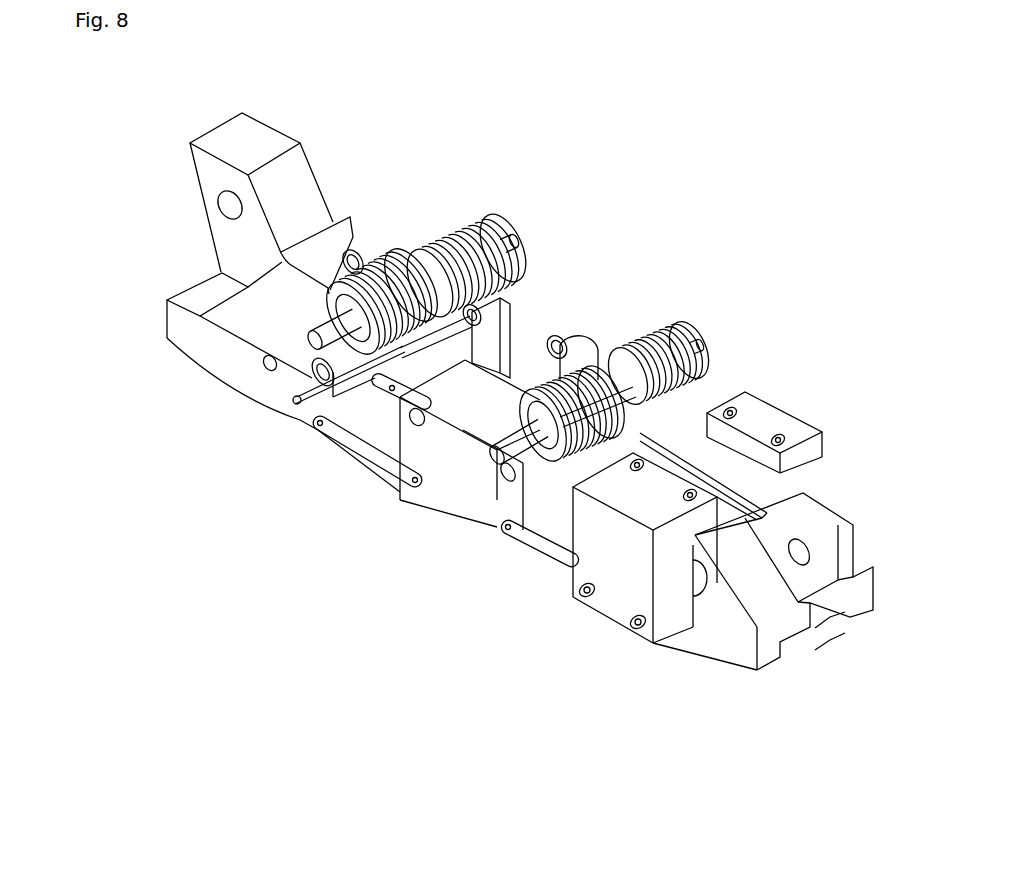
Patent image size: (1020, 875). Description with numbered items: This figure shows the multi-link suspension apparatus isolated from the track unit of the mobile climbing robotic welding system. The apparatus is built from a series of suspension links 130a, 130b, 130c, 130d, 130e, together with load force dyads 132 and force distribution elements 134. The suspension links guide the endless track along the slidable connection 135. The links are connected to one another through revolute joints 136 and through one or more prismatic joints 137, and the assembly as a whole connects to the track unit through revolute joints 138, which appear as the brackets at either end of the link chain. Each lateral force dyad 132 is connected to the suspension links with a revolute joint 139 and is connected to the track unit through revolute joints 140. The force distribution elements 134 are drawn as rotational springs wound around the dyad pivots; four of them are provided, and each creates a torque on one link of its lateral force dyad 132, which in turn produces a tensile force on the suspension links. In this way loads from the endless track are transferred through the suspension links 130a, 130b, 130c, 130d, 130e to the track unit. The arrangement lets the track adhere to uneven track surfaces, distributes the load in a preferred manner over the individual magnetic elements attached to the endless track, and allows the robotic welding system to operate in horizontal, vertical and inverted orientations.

The suspension link 130a is at (253, 408).
The suspension link 130b is at (307, 435).
The suspension link 130c is at (423, 520).
The suspension link 130d is at (508, 552).
The suspension link 130e is at (673, 657).
The load force dyad 132 is at (573, 315).
The force distribution element 134 is at (397, 253).
The slidable connection 135 is at (820, 633).
The revolute joint 136 is at (487, 527).
The prismatic joint 137 is at (692, 597).
The revolute joint 138 is at (213, 200).
The revolute joint 139 is at (307, 370).
The revolute joint 140 is at (527, 221).